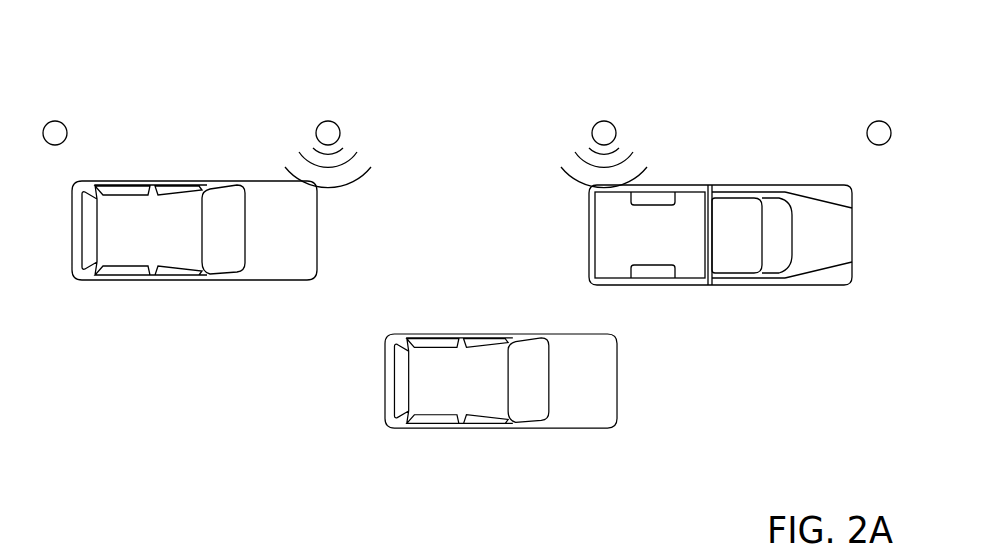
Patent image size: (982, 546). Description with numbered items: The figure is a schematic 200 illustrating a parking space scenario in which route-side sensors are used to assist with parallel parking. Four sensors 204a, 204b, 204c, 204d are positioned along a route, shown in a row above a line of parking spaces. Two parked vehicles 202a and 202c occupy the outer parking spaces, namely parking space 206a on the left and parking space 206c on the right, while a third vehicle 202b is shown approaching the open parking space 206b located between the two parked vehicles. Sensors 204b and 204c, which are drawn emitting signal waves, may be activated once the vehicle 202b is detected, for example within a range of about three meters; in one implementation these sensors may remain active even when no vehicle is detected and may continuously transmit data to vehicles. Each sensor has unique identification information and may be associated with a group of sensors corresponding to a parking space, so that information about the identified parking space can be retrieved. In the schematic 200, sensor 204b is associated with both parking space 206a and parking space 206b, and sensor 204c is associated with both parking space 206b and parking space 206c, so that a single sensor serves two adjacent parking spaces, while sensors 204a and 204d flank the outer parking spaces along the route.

The schematic 200 is at (79, 46).
The parked vehicle 202a is at (182, 281).
The vehicle 202b is at (578, 428).
The parked vehicle 202c is at (827, 286).
The sensor 204a is at (60, 122).
The sensor 204b is at (333, 122).
The sensor 204c is at (609, 122).
The sensor 204d is at (884, 122).
The parking space 206a is at (191, 142).
The parking space 206b is at (461, 156).
The parking space 206c is at (767, 156).